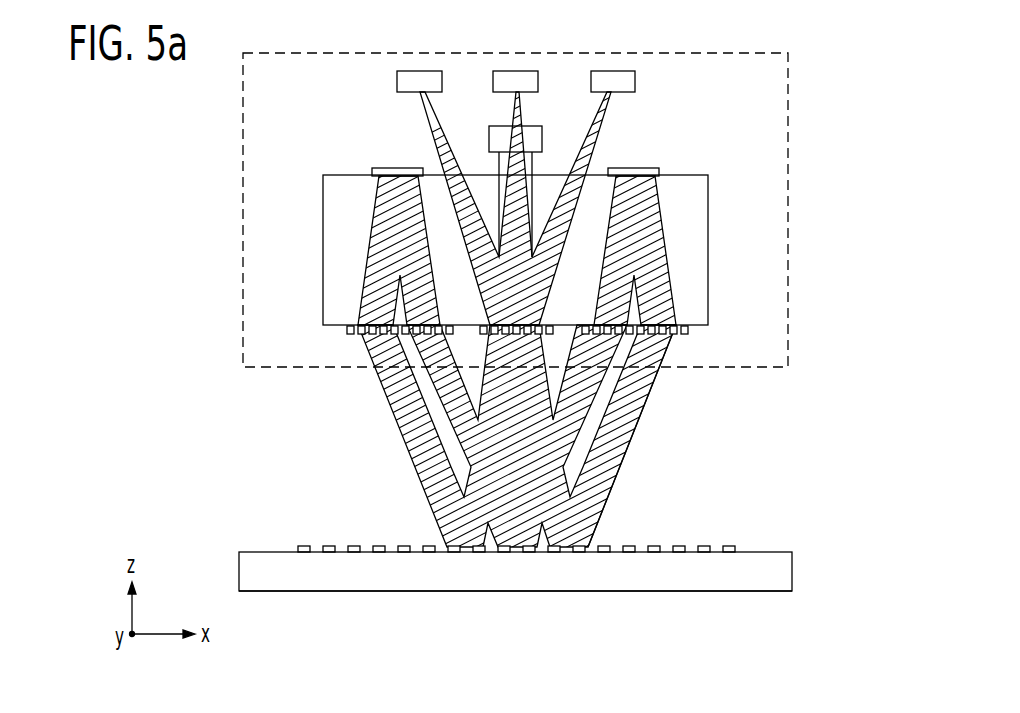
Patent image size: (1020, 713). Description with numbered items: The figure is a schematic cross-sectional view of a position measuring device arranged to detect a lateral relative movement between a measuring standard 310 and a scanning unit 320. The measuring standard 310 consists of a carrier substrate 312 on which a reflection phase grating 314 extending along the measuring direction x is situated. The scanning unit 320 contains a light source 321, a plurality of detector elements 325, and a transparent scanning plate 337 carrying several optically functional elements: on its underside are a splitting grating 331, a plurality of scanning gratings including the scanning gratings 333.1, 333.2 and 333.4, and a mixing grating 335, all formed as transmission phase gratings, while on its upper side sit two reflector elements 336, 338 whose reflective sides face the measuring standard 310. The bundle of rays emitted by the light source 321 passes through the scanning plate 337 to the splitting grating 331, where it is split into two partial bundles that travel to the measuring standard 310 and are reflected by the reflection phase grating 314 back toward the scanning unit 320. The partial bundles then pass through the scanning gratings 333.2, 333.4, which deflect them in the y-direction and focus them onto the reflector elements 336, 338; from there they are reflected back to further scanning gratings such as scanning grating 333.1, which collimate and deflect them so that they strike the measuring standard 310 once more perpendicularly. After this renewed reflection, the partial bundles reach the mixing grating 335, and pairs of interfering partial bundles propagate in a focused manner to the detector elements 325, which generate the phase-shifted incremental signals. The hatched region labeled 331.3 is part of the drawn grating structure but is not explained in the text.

The measuring standard 310 is at (362, 608).
The carrier substrate 312 is at (650, 573).
The reflection phase grating 314 is at (320, 537).
The scanning unit 320 is at (218, 172).
The light source 321 is at (502, 138).
The detector elements 325 is at (602, 82).
The splitting grating 331 is at (450, 335).
The body portion 331.3 is at (643, 337).
The scanning grating 333.1 is at (483, 337).
The scanning grating 333.2 is at (343, 328).
The scanning grating 333.4 is at (692, 332).
The mixing grating 335 is at (485, 436).
The reflector element 336 is at (401, 166).
The transparent scanning plate 337 is at (343, 206).
The reflector element 338 is at (634, 166).